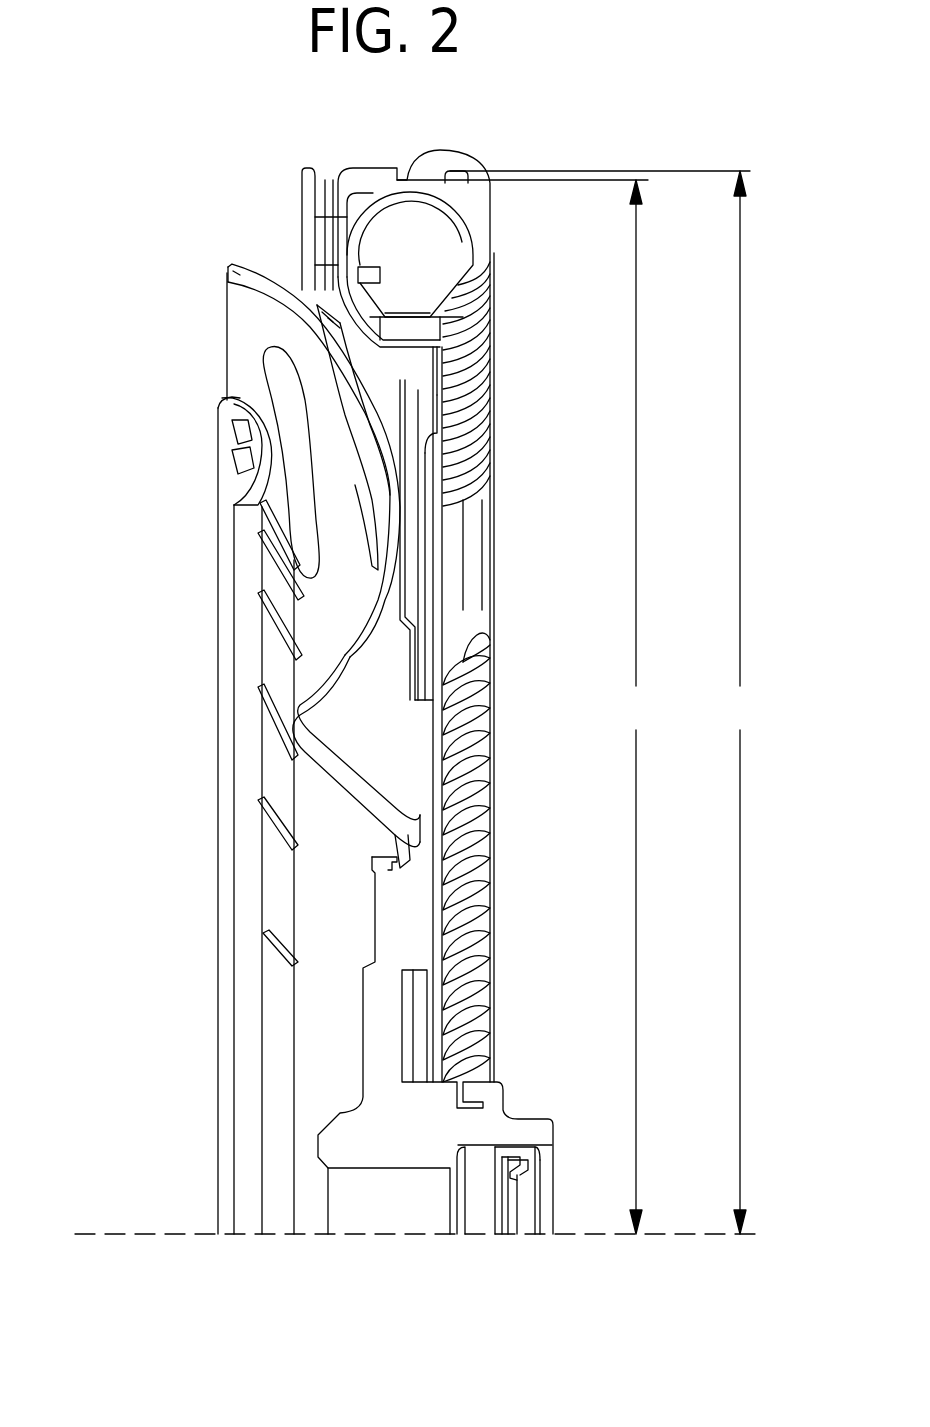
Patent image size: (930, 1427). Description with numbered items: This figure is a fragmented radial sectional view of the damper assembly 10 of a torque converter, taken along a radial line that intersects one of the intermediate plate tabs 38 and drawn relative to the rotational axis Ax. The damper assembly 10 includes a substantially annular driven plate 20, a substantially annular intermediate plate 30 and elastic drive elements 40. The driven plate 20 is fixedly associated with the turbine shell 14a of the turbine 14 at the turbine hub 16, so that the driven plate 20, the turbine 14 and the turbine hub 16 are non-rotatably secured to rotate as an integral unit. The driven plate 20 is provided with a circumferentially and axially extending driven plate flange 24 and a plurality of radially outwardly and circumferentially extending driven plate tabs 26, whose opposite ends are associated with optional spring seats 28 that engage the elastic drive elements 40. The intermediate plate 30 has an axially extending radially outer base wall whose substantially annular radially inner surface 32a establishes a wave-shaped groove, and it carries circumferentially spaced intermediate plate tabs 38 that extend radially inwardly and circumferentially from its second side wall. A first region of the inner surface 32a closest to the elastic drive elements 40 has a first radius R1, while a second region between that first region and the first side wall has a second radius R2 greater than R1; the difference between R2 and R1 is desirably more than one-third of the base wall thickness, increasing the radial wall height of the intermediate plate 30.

The damper assembly 10 is at (97, 384).
The turbine 14 is at (215, 460).
The turbine shell 14a is at (232, 274).
The turbine hub 16 is at (397, 917).
The driven plate 20 is at (318, 198).
The driven plate flange 24 is at (437, 344).
The driven plate tabs 26 is at (455, 576).
The spring seats 28 is at (423, 224).
The intermediate plate 30 is at (465, 163).
The radially inner surface of the base wall 32a is at (395, 180).
The intermediate plate tabs 38 is at (416, 326).
The elastic drive elements 40 is at (485, 410).
The first radius R1 is at (524, 707).
The second radius R2 is at (602, 702).
The axis Ax is at (106, 1233).